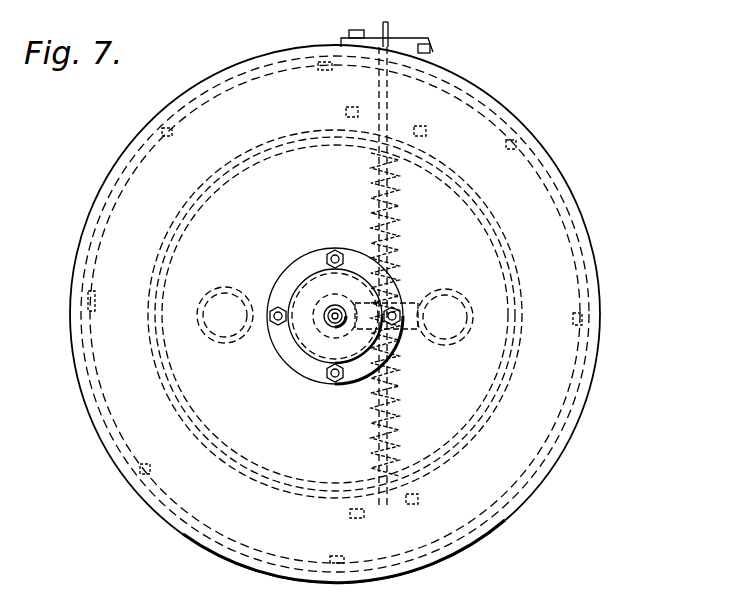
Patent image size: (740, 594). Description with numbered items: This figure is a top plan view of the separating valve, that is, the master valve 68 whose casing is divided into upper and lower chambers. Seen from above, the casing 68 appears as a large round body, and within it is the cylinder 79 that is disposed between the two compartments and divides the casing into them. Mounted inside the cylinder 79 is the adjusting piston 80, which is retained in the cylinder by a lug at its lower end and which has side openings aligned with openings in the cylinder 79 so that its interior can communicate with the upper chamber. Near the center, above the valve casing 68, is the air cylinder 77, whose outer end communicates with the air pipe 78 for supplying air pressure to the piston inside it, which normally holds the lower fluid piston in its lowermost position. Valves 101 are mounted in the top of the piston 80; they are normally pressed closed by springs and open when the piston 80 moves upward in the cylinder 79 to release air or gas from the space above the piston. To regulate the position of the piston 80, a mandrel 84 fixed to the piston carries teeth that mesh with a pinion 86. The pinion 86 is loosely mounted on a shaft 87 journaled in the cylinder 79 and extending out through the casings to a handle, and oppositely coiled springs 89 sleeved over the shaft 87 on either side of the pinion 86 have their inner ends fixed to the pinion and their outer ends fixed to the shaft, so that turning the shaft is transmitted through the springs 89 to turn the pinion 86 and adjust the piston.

The master valve casing 68 is at (600, 290).
The air cylinder 77 is at (312, 341).
The air pipe 78 is at (334, 328).
The cylinder 79 is at (170, 405).
The adjusting piston 80 is at (198, 422).
The mandrel 84 is at (302, 272).
The pinion 86 is at (415, 330).
The shaft 87 is at (392, 34).
The oppositely coiled springs 89 is at (405, 214).
The valves 101 is at (222, 332).